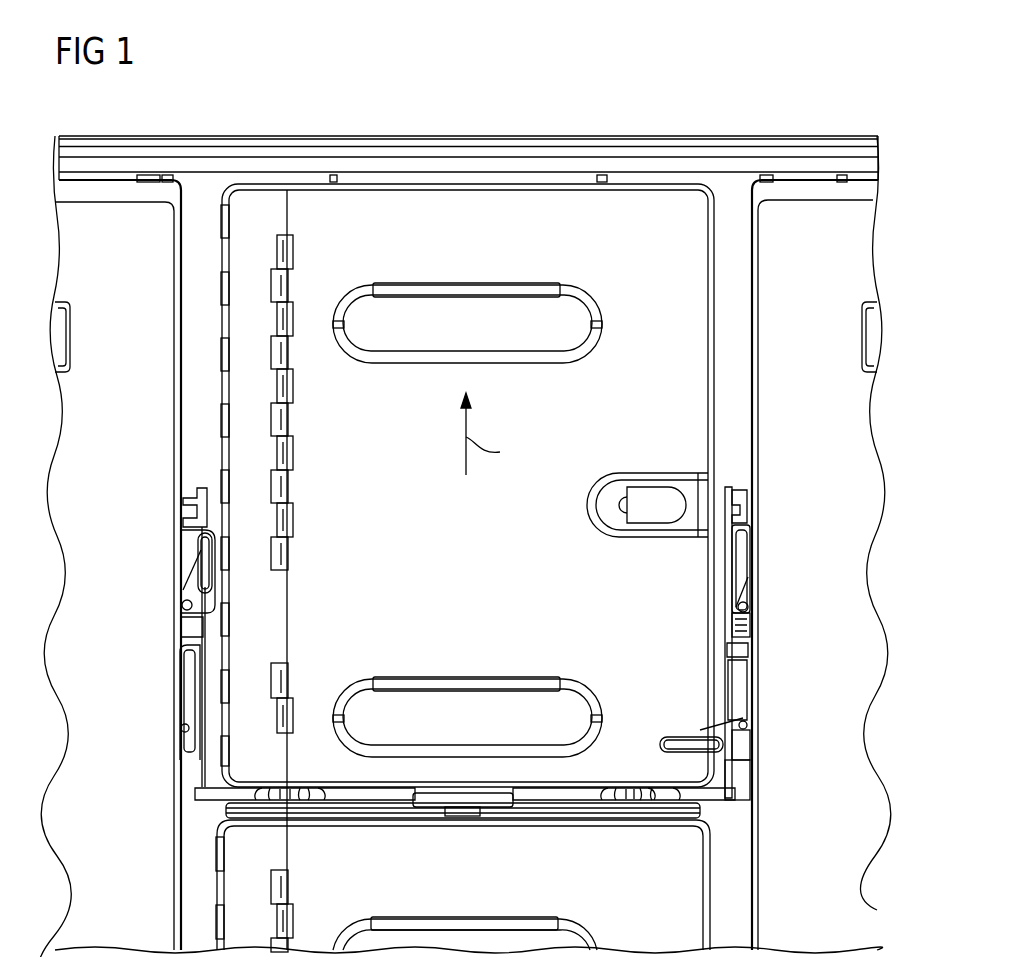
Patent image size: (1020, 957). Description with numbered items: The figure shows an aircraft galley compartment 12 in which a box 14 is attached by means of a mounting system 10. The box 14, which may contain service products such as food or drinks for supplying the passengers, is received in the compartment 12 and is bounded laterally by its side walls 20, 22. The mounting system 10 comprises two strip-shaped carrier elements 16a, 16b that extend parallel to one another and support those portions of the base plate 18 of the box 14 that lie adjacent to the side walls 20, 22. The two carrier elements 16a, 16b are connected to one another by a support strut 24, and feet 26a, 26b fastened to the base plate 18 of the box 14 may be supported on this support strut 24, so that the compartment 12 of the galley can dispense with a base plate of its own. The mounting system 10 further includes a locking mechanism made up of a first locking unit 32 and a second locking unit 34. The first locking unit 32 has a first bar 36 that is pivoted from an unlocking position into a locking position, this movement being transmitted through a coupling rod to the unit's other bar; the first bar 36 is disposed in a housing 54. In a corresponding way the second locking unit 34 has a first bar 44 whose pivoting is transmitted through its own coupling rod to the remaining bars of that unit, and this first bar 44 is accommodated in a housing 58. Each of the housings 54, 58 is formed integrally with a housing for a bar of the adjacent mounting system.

The mounting system 10 is at (735, 473).
The compartment 12 is at (732, 195).
The box 14 is at (483, 200).
The carrier element 16a is at (240, 800).
The carrier element 16b is at (695, 800).
The base plate 18 is at (548, 800).
The side wall 20 is at (222, 316).
The side wall 22 is at (715, 298).
The support strut 24 is at (385, 808).
The foot 26a is at (305, 797).
The foot 26b is at (627, 797).
The first locking unit 32 is at (736, 692).
The second locking unit 34 is at (170, 546).
The first bar 36 is at (698, 742).
The first bar 44 is at (186, 598).
The housing 54 is at (742, 700).
The housing 58 is at (188, 773).